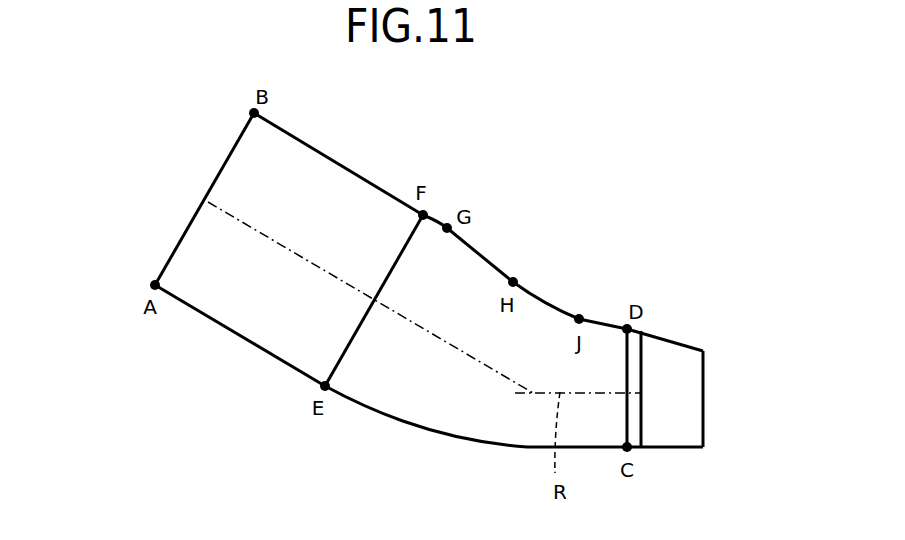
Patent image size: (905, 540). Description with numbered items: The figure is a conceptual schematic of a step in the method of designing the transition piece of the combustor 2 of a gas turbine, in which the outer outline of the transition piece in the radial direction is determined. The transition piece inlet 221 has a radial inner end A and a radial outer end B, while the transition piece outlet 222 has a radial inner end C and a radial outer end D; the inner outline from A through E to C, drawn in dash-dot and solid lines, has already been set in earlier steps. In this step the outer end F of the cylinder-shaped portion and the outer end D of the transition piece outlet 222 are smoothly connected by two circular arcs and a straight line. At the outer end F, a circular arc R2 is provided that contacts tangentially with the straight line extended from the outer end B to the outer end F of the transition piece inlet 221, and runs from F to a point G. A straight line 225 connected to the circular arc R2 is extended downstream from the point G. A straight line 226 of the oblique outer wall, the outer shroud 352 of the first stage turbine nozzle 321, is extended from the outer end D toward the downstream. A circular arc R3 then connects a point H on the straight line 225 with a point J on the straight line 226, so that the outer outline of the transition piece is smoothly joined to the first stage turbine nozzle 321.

The combustor 2 is at (350, 165).
The transition piece inlet 221 is at (183, 237).
The transition piece outlet 222 is at (628, 413).
The straight line 225 is at (486, 258).
The straight line 226 is at (602, 322).
The first stage turbine nozzle 321 is at (706, 400).
The outer shroud 352 is at (670, 340).
The circular arc R2 is at (434, 226).
The circular arc R3 is at (544, 301).